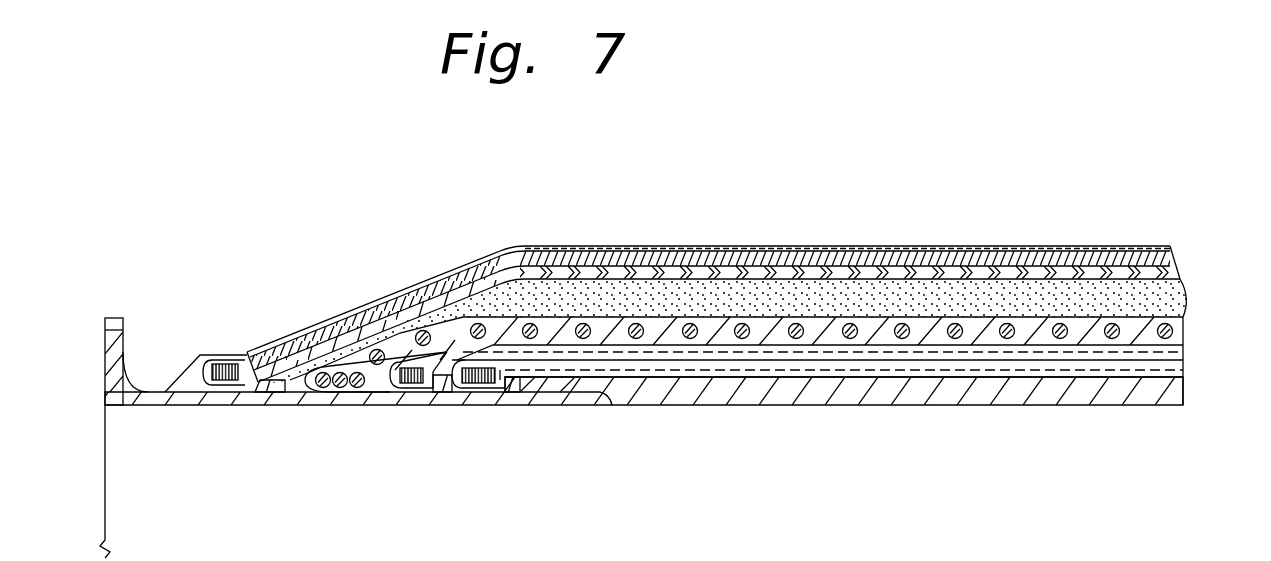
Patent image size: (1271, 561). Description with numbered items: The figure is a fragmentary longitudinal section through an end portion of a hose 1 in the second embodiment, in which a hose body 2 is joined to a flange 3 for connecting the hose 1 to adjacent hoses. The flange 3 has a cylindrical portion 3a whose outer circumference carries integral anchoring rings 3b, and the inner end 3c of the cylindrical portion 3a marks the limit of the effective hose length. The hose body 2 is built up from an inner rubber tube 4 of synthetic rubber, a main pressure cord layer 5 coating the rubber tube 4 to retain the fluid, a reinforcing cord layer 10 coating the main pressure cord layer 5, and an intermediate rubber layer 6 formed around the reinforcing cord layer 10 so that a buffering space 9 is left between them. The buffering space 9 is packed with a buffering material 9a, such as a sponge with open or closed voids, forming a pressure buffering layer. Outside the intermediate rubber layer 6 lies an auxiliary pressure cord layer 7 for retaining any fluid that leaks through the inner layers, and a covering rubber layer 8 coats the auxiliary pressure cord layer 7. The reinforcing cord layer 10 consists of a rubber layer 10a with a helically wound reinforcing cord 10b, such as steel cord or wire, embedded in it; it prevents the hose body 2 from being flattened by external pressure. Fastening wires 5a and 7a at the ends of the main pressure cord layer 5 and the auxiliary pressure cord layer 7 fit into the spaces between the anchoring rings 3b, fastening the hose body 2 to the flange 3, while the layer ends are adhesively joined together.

The hose 1 is at (696, 240).
The hose body 2 is at (1087, 244).
The flange 3 is at (99, 400).
The cylindrical portion 3a is at (378, 394).
The anchoring rings 3b is at (270, 392).
The inner end 3c is at (612, 400).
The rubber tube 4 is at (714, 392).
The main pressure cord layer 5 is at (880, 368).
The fastening wires 5a is at (412, 385).
The intermediate rubber layer 6 is at (999, 273).
The auxiliary pressure cord layer 7 is at (932, 262).
The fastening wires 7a is at (213, 387).
The covering rubber layer 8 is at (853, 250).
The buffering space 9 is at (1170, 265).
The buffering material 9a is at (1183, 300).
The reinforcing cord layer 10 is at (1025, 345).
The rubber layer 10a is at (1082, 330).
The reinforcing cord 10b is at (1113, 337).